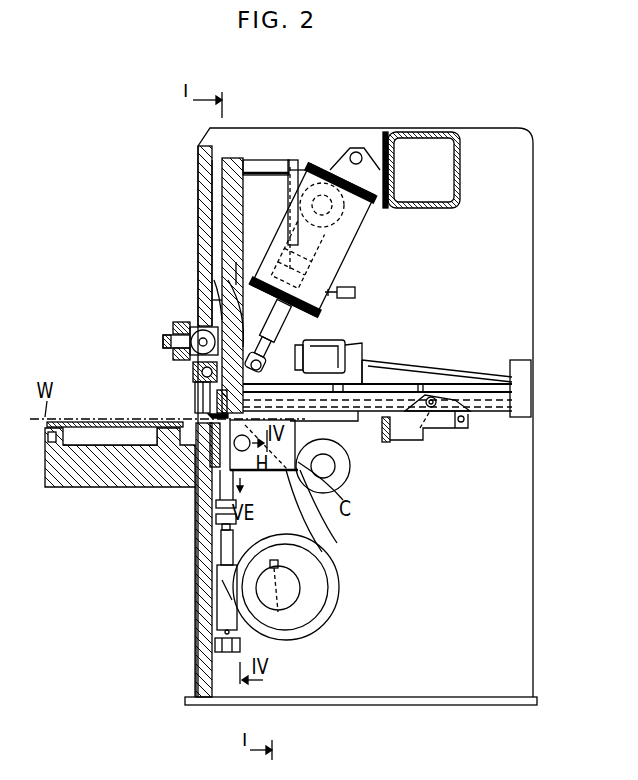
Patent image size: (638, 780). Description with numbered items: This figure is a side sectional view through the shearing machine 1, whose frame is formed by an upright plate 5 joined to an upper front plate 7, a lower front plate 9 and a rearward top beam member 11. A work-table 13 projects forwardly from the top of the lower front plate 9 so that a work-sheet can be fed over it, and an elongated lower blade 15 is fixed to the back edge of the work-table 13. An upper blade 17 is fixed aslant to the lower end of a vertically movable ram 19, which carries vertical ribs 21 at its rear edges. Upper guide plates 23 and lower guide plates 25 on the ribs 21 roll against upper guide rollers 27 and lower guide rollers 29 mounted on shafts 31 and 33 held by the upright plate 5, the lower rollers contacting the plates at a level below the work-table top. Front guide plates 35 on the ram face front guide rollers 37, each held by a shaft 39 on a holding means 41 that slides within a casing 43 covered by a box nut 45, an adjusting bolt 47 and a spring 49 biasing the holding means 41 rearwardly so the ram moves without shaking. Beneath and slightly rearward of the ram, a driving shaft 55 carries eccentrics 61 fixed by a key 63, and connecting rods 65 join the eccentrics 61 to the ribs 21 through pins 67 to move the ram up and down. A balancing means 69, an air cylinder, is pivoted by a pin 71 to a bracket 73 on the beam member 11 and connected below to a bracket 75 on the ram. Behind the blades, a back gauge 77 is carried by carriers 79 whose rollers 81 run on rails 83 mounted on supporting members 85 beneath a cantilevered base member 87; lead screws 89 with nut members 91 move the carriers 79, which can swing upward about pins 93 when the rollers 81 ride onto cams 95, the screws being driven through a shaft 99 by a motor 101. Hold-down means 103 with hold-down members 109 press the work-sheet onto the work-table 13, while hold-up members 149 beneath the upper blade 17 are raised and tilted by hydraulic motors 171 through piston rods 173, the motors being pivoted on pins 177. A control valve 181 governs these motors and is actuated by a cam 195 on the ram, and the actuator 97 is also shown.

The shearing machine 1 is at (456, 130).
The upright plate 5 is at (443, 580).
The upper front plate 7 is at (198, 182).
The lower front plate 9 is at (200, 648).
The beam member 11 is at (460, 153).
The work-table 13 is at (75, 488).
The lower blade 15 is at (210, 436).
The upper blade 17 is at (194, 394).
The ram 19 is at (232, 232).
The vertical ribs 21 is at (262, 172).
The upper guide plates 23 is at (292, 168).
The lower guide plates 25 is at (327, 527).
The upper guide rollers 27 is at (304, 164).
The lower guide rollers 29 is at (349, 492).
The shaft 31 is at (348, 212).
The shaft 33 is at (337, 470).
The front guide plates 35 is at (218, 298).
The front guide rollers 37 is at (213, 312).
The shaft 39 is at (239, 292).
The holding means 41 is at (236, 272).
The casing 43 is at (200, 330).
The box nut 45 is at (180, 324).
The adjusting bolt 47 is at (168, 338).
The spring 49 is at (170, 352).
The driving shaft 55 is at (298, 602).
The eccentrics 61 is at (328, 594).
The key 63 is at (280, 563).
The connecting rods 65 is at (338, 552).
The pins 67 is at (246, 441).
The balancing means 69 is at (340, 250).
The pin 71 is at (352, 152).
The bracket 73 is at (386, 140).
The bracket 75 is at (294, 346).
The back gauge 77 is at (389, 442).
The carriers 79 is at (443, 429).
The rollers 81 is at (436, 430).
The rails 83 is at (358, 421).
The supporting members 85 is at (431, 395).
The base member 87 is at (466, 378).
The lead screws 89 is at (370, 396).
The nut members 91 is at (470, 425).
The pins 93 is at (462, 422).
The cams 95 is at (480, 392).
The actuating cylinder 97 is at (268, 343).
The shaft 99 is at (324, 356).
The motor 101 is at (343, 341).
The hold-down means 103 is at (189, 383).
The hold-down member 109 is at (220, 416).
The hold-up members 149 is at (205, 445).
The hydraulic motors 171 is at (220, 610).
The piston rod 173 is at (221, 547).
The pins 177 is at (222, 650).
The control valve 181 is at (368, 288).
The cam 195 is at (297, 254).